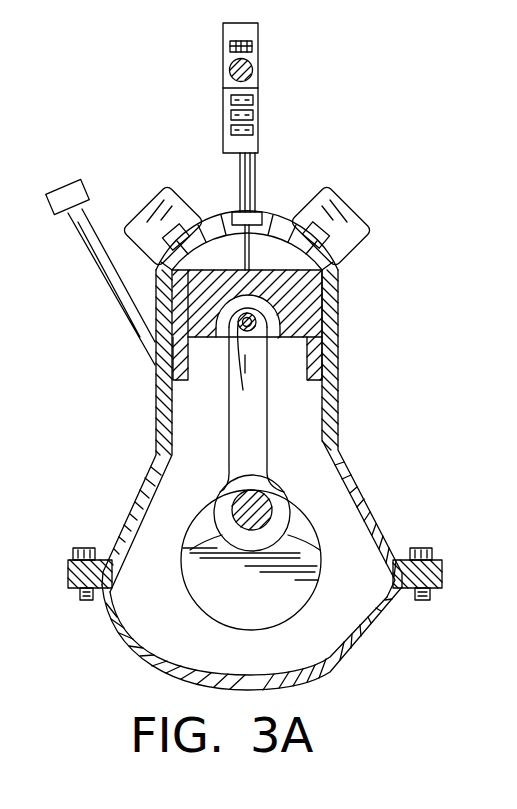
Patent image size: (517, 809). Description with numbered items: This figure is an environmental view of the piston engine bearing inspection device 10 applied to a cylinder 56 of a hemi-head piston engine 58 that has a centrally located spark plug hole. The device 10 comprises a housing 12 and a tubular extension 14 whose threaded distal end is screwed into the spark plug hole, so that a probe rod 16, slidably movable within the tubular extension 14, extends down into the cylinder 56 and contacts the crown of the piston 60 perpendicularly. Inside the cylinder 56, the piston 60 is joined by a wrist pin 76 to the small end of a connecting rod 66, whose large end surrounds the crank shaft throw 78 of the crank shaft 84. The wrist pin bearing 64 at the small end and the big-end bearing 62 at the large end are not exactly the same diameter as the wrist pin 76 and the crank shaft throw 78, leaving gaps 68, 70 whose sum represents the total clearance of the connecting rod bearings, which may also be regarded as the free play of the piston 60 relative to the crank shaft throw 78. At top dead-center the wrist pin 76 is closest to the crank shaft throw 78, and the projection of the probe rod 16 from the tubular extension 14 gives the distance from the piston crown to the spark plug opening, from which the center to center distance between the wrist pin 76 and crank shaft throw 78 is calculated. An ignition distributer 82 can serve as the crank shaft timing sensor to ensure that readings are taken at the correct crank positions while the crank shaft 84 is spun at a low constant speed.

The device 10 is at (291, 119).
The housing 12 is at (229, 72).
The tubular extension 14 is at (240, 178).
The probe rod 16 is at (252, 253).
The cylinder 56 is at (173, 428).
The piston engine 58 is at (366, 411).
The piston 60 is at (297, 313).
The big-end bearing 62 is at (318, 559).
The wrist pin bearing 64 is at (228, 336).
The connecting rod 66 is at (260, 462).
The gap 68 is at (181, 559).
The gap 70 is at (263, 355).
The wrist pin 76 is at (240, 370).
The crank shaft throw 78 is at (252, 510).
The ignition distributer 82 is at (57, 185).
The crank shaft 84 is at (223, 617).